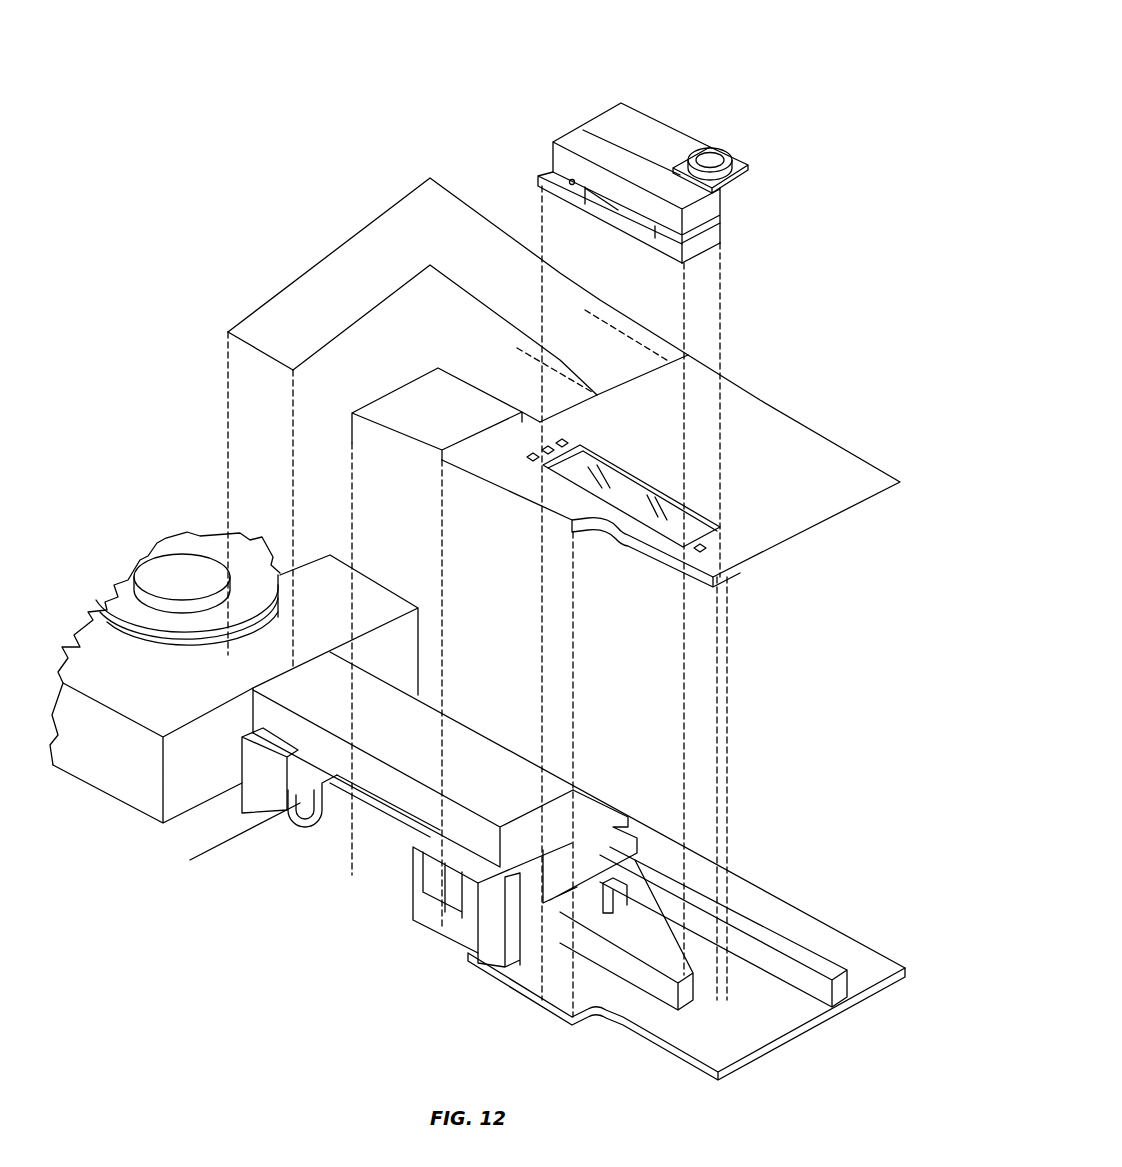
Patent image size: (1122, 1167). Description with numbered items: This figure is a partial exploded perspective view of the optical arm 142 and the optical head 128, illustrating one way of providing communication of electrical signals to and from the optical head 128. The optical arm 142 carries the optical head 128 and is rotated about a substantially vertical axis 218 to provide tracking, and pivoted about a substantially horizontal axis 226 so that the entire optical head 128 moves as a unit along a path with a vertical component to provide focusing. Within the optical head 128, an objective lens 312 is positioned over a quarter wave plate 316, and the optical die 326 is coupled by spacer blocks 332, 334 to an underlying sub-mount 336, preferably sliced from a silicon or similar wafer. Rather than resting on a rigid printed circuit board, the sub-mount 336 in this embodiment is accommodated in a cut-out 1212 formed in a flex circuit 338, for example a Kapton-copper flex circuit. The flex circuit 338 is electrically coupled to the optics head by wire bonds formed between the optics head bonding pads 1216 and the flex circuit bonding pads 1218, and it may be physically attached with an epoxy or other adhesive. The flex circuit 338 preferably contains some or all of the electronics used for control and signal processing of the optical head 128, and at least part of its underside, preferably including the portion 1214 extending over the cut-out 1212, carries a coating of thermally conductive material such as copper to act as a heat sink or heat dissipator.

The optical head 128 is at (718, 82).
The objective lens 312 is at (705, 149).
The quarter wave plate 316 is at (737, 173).
The optical die 326 is at (717, 208).
The spacer block 332 is at (587, 187).
The spacer block 334 is at (720, 230).
The sub-mount 336 is at (720, 243).
The flex circuit 338 is at (790, 522).
The cut-out 1212 is at (593, 452).
The portion extending over the cut-out region 1214 is at (617, 487).
The optics head bonding pads 1216 is at (552, 173).
The flex circuit bonding pads 1218 is at (532, 461).
The vertical axis 218 is at (180, 577).
The horizontal axis 226 is at (215, 850).
The optical arm 142 is at (312, 948).